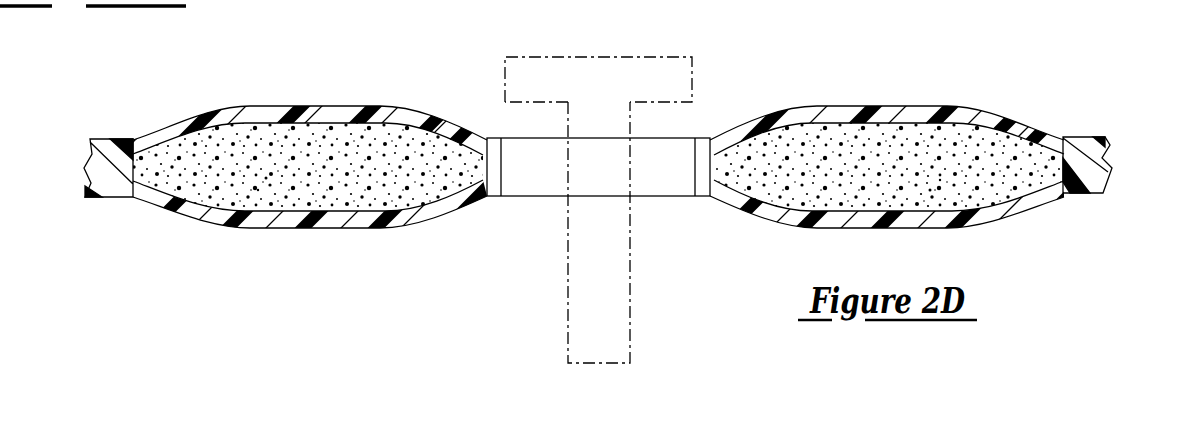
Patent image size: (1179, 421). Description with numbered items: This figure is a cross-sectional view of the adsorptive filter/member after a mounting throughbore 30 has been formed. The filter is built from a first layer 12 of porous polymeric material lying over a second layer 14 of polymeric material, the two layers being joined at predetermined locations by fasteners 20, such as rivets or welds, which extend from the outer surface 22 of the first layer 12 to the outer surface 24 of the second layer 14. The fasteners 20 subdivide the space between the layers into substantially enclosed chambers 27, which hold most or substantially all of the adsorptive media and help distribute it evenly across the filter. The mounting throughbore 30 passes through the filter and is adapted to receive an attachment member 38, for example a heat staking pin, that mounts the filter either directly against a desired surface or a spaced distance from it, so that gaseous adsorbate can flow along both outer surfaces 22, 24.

The first layer 12 is at (313, 120).
The second layer 14 is at (358, 217).
The fasteners 20 is at (114, 132).
The outer surface of the first layer 22 is at (283, 100).
The outer surface of the second layer 24 is at (168, 214).
The enclosed chambers 27 is at (260, 192).
The mounting throughbores 30 is at (516, 204).
The attachment members 38 is at (624, 57).